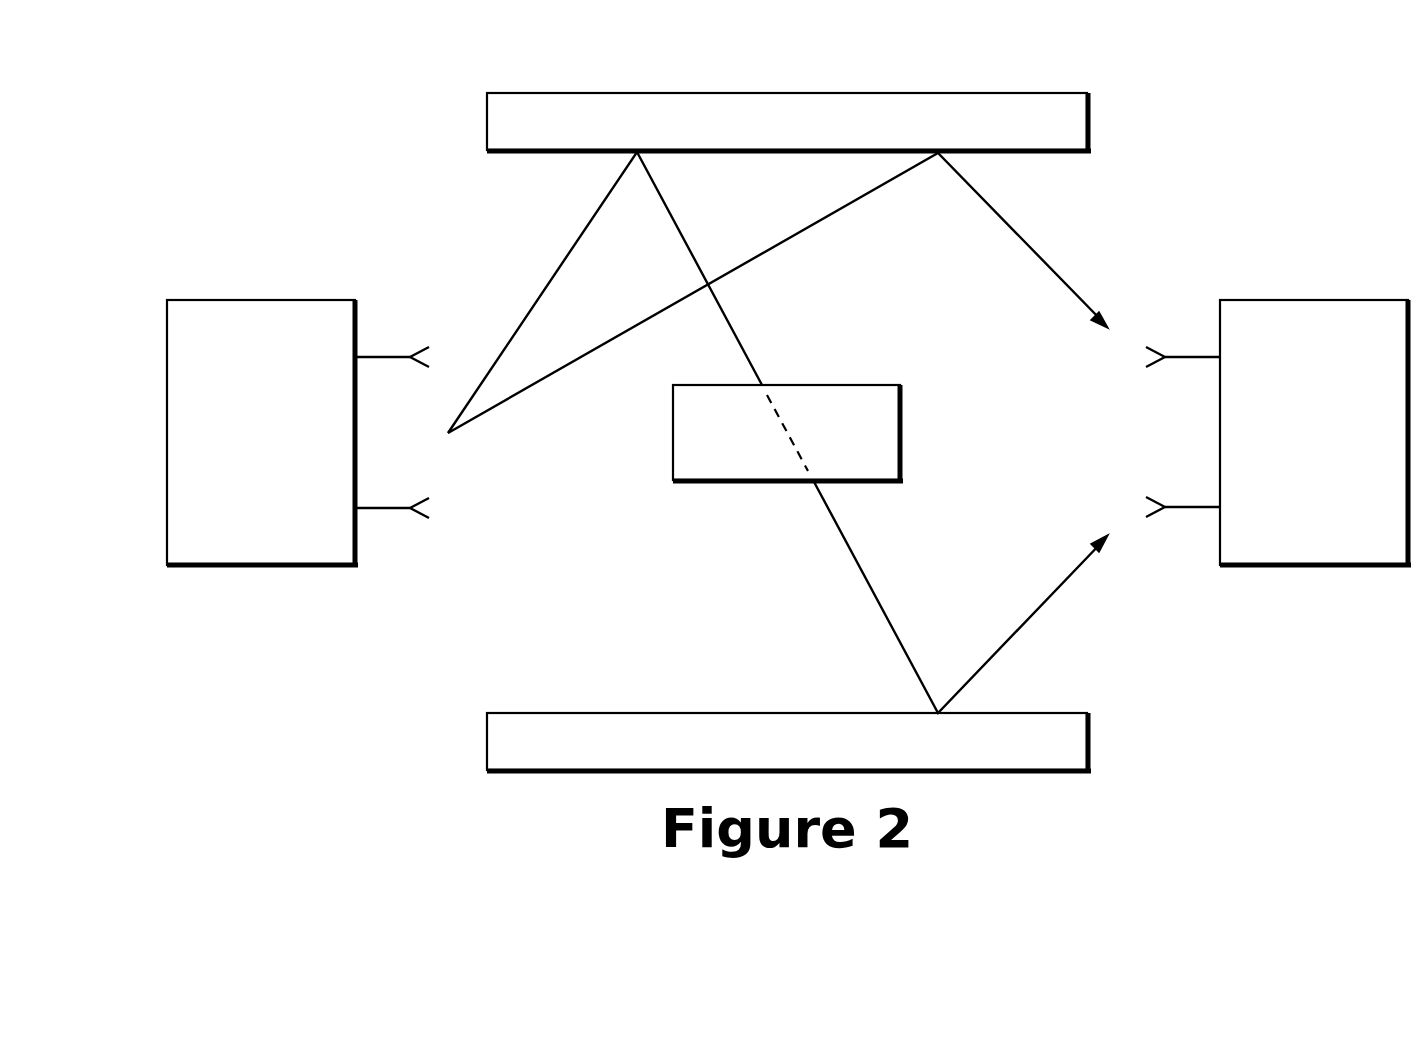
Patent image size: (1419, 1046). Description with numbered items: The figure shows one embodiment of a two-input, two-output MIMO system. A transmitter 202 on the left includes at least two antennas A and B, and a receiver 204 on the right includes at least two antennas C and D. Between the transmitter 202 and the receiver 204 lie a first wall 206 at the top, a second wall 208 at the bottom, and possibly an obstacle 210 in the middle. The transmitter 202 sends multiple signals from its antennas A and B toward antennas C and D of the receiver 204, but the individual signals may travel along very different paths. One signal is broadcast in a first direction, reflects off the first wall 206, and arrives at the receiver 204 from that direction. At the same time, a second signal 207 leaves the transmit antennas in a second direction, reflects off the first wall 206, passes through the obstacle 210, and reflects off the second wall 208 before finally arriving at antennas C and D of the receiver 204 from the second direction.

The transmitter 202 is at (259, 300).
The receiver 204 is at (1313, 300).
The first wall 206 is at (786, 93).
The second signal 207 is at (432, 242).
The second wall 208 is at (786, 713).
The obstacle 210 is at (852, 385).